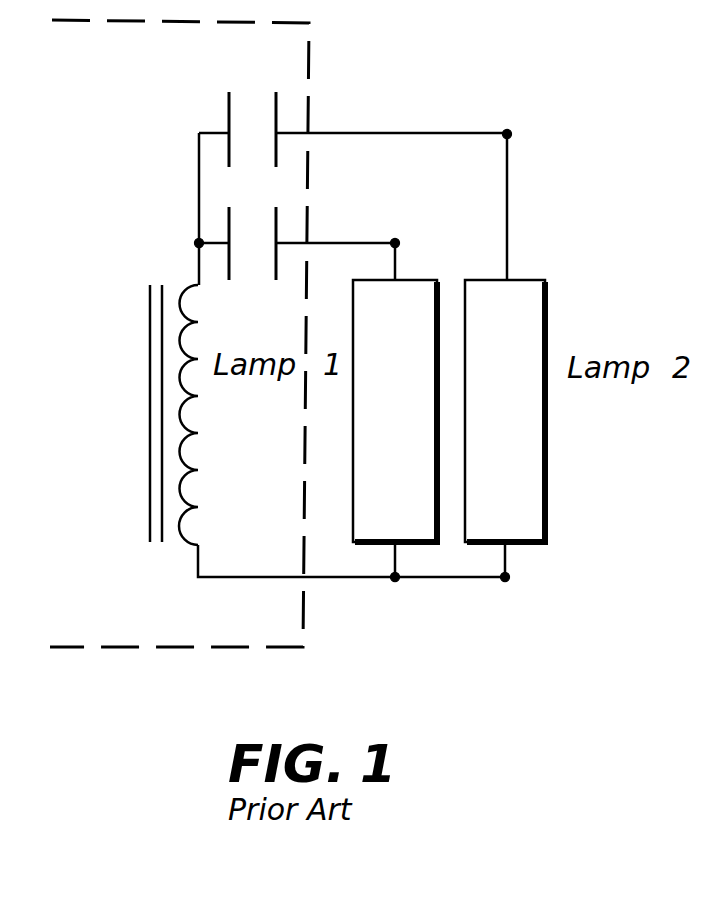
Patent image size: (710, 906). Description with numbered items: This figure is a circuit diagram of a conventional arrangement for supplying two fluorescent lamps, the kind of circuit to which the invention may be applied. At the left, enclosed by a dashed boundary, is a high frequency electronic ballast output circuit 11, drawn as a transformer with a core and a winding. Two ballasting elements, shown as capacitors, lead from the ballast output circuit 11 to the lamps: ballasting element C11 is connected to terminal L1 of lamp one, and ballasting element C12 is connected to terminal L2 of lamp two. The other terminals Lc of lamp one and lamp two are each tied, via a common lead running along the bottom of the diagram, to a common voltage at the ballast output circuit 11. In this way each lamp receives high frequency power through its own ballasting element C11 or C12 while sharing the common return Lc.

The high frequency electronic ballast output circuit 11 is at (150, 400).
The ballasting element C12 is at (353, 110).
The ballasting element C11 is at (295, 224).
The terminal of lamp 1 L1 is at (400, 242).
The terminal of lamp 2 L2 is at (508, 187).
The other terminals of lamp 1 and lamp 2 Lc is at (442, 583).